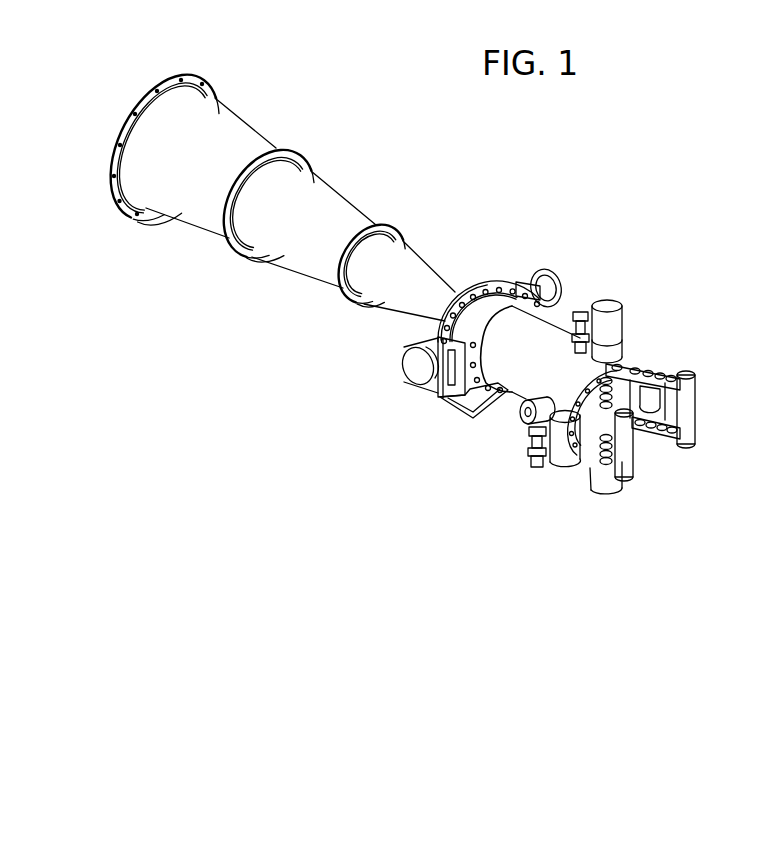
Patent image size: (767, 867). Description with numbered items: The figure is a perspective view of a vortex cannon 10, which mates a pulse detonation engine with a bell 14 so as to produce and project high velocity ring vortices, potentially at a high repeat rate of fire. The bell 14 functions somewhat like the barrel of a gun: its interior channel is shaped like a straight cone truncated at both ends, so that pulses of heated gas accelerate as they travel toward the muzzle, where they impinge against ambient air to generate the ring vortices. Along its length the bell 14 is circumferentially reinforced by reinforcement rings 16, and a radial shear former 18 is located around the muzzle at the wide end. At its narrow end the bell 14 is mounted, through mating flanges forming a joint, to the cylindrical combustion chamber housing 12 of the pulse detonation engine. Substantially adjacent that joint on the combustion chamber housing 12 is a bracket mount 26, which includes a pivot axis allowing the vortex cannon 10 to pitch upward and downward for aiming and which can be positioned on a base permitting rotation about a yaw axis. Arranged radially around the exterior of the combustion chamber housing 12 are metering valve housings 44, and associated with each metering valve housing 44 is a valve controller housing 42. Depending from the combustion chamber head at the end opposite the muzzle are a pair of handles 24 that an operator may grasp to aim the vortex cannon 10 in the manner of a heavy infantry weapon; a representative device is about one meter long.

The vortex cannon 10 is at (494, 246).
The combustion chamber housing 12 is at (520, 367).
The bell 14 is at (310, 205).
The reinforcement rings 16 is at (237, 252).
The radial shear former 18 is at (108, 174).
The handles 24 is at (623, 477).
The bracket mount 26 is at (440, 396).
The valve controller housing 42 is at (613, 332).
The metering valve housings 44 is at (583, 313).